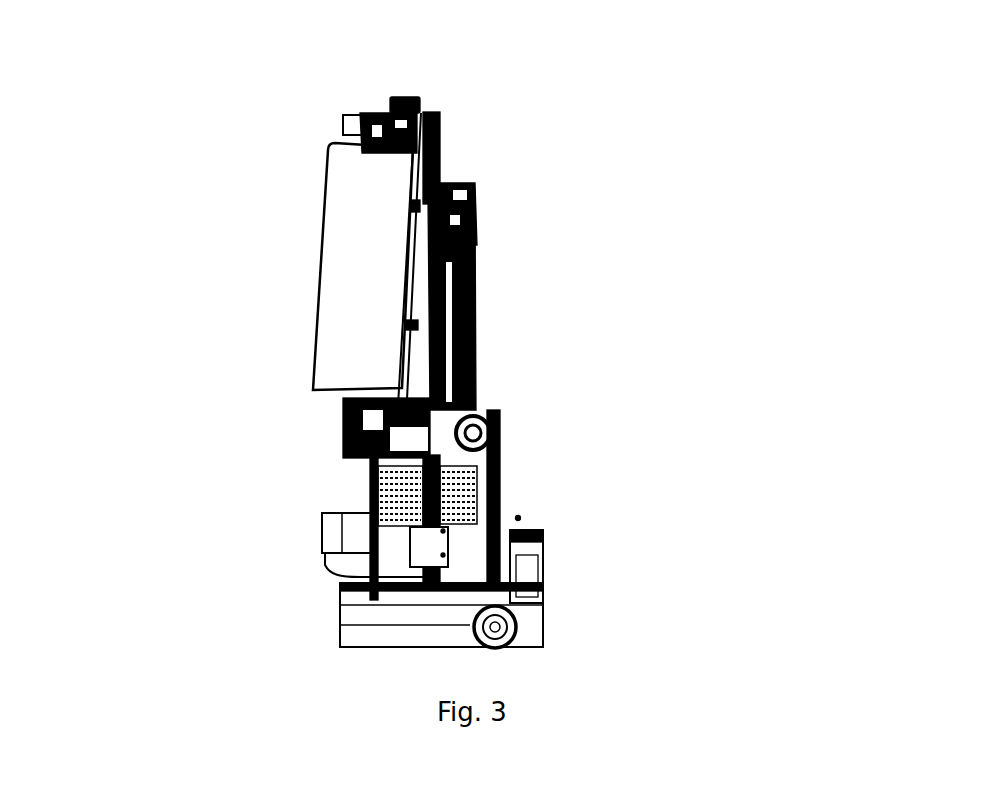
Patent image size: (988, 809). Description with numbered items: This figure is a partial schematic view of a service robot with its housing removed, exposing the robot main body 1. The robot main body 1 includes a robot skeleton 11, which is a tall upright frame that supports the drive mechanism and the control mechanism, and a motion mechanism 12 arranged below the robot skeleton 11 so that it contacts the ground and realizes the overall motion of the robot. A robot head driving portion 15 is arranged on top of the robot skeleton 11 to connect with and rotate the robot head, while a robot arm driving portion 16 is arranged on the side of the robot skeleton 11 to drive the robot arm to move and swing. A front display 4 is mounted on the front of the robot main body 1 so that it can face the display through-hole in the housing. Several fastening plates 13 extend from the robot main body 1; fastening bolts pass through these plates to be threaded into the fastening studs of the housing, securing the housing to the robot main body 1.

The robot main body 1 is at (830, 370).
The front display 4 is at (358, 225).
The robot skeleton 11 is at (470, 313).
The motion mechanism 12 is at (500, 612).
The fastening plate 13 is at (360, 116).
The robot head driving portion 15 is at (420, 100).
The robot arm driving portion 16 is at (473, 215).